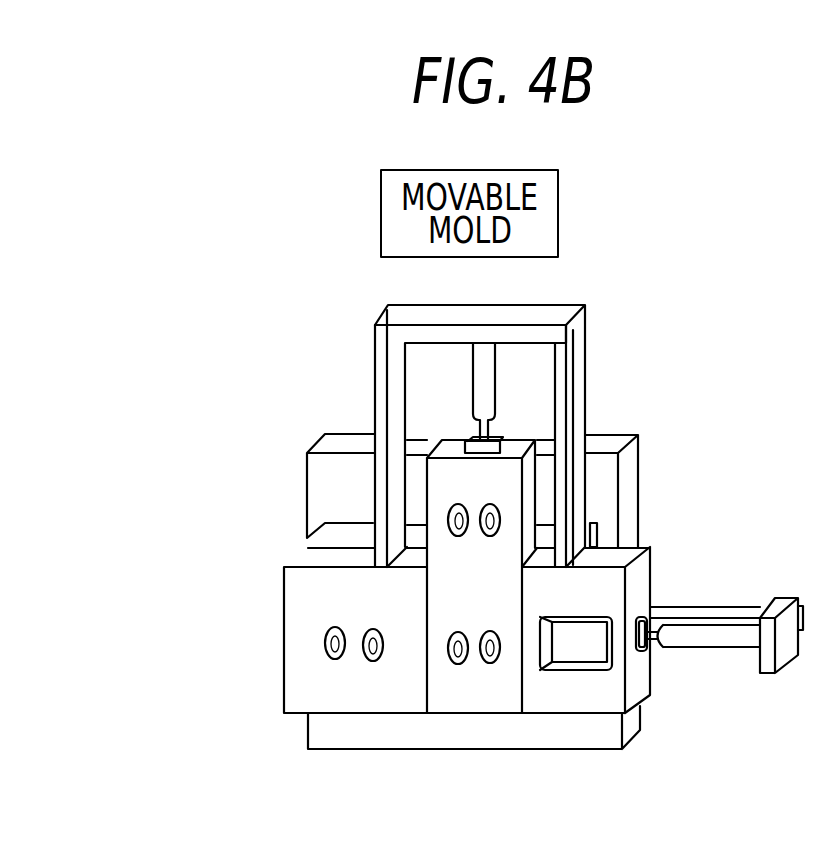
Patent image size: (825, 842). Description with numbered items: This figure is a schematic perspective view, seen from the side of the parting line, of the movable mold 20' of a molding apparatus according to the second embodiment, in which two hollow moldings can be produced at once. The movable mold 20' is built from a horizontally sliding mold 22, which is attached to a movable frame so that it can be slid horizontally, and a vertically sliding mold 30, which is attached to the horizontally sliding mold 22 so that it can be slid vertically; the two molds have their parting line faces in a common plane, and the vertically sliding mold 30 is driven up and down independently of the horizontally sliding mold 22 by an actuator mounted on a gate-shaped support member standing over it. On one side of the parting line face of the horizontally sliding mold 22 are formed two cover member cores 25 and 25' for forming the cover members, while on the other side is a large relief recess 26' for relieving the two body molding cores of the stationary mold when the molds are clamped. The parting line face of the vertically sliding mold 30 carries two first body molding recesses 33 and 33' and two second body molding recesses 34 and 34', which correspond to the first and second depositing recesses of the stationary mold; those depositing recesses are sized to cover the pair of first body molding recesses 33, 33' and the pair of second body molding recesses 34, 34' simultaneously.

The movable mold 20' is at (528, 533).
The horizontally sliding mold 22 is at (640, 582).
The cover member core 25 is at (303, 712).
The cover member core 25' is at (361, 724).
The relief recess 26' is at (576, 718).
The vertically sliding mold 30 is at (503, 485).
The first body molding recess 33 is at (356, 513).
The first body molding recess 33' is at (592, 495).
The second body molding recess 34 is at (448, 725).
The second body molding recess 34' is at (503, 721).